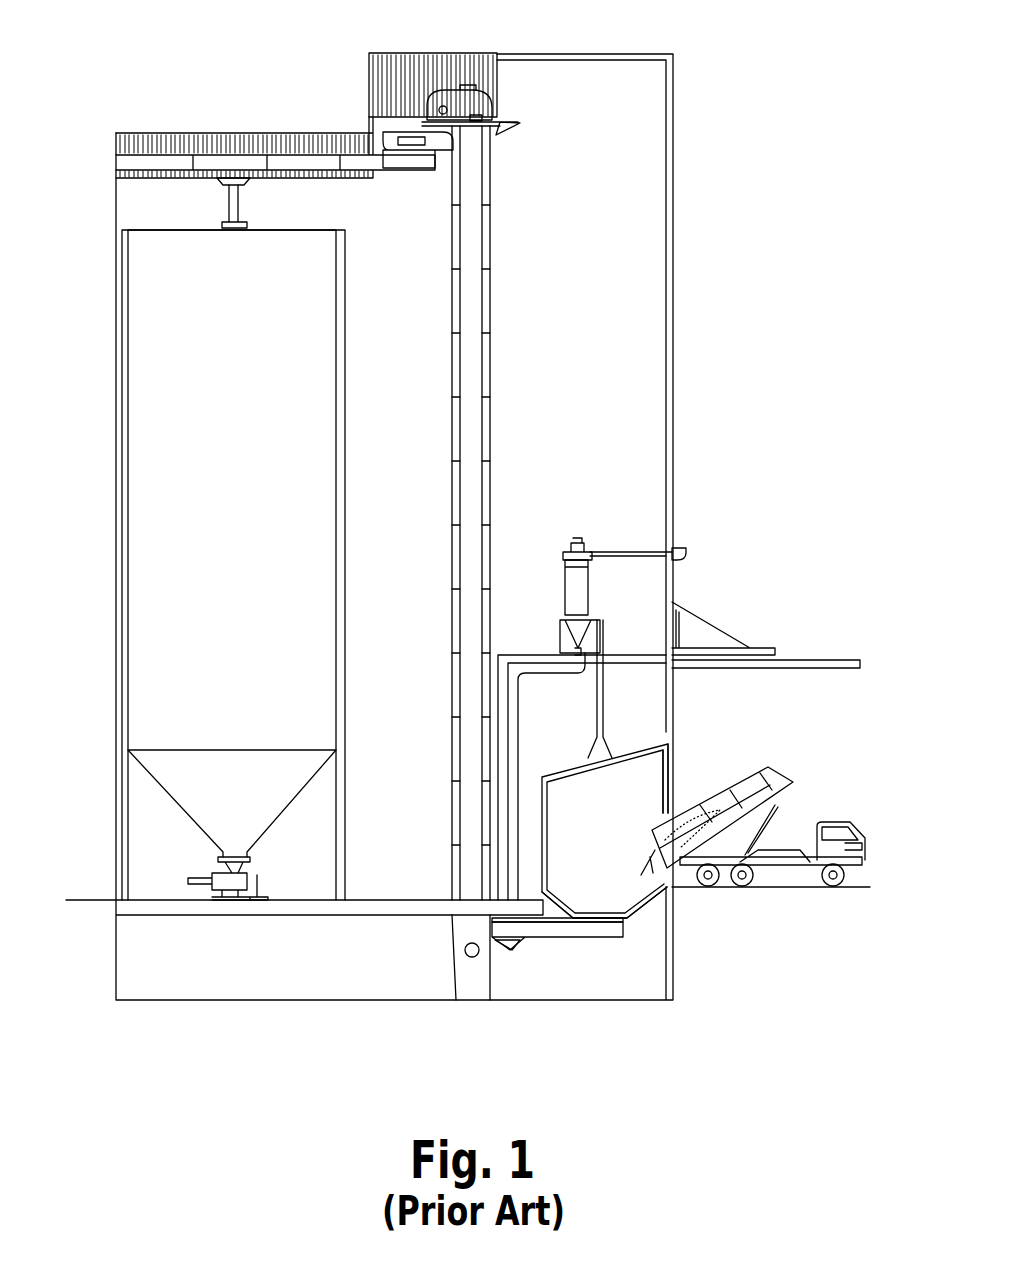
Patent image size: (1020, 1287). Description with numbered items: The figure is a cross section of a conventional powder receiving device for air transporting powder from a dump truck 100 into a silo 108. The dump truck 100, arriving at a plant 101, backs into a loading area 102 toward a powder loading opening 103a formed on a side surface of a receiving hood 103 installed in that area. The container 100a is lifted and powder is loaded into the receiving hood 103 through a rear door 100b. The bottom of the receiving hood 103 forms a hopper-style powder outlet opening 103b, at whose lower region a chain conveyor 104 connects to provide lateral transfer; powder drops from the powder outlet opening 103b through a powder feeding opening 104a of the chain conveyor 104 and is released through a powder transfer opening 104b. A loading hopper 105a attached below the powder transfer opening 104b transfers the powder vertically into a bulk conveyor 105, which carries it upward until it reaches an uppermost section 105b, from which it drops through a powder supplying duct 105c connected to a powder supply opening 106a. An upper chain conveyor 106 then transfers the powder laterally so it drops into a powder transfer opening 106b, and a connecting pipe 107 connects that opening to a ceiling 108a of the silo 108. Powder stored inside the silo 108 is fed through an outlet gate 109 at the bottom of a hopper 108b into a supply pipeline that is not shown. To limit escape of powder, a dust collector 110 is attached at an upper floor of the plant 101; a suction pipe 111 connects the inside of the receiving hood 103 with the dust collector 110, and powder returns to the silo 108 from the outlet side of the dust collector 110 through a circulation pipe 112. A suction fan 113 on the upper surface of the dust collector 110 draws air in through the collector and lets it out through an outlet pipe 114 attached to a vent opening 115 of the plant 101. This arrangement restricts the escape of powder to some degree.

The dump truck 100 is at (840, 828).
The container 100a is at (790, 785).
The rear door 100b is at (650, 867).
The plant 101 is at (730, 112).
The loading area 102 is at (785, 888).
The receiving hood 103 is at (635, 770).
The powder loading opening 103a is at (680, 802).
The powder outlet opening 103b is at (564, 903).
The chain conveyor 104 is at (552, 937).
The powder feeding opening 104a is at (598, 937).
The powder transfer opening 104b is at (518, 942).
The bulk conveyor 105 is at (478, 352).
The loading hopper 105a is at (500, 958).
The uppermost section 105b is at (478, 100).
The powder supplying duct 105c is at (405, 130).
The chain conveyor 106 is at (302, 163).
The powder supply opening 106a is at (408, 150).
The powder transfer opening 106b is at (233, 173).
The connecting pipe 107 is at (246, 203).
The silo 108 is at (318, 392).
The ceiling 108a is at (170, 228).
The hopper 108b is at (222, 748).
The outlet gate 109 is at (210, 875).
The dust collector 110 is at (568, 600).
The suction pipe 111 is at (605, 640).
The circulation pipe 112 is at (545, 672).
The suction fan 113 is at (562, 552).
The outlet pipe 114 is at (632, 548).
The vent opening 115 is at (690, 548).